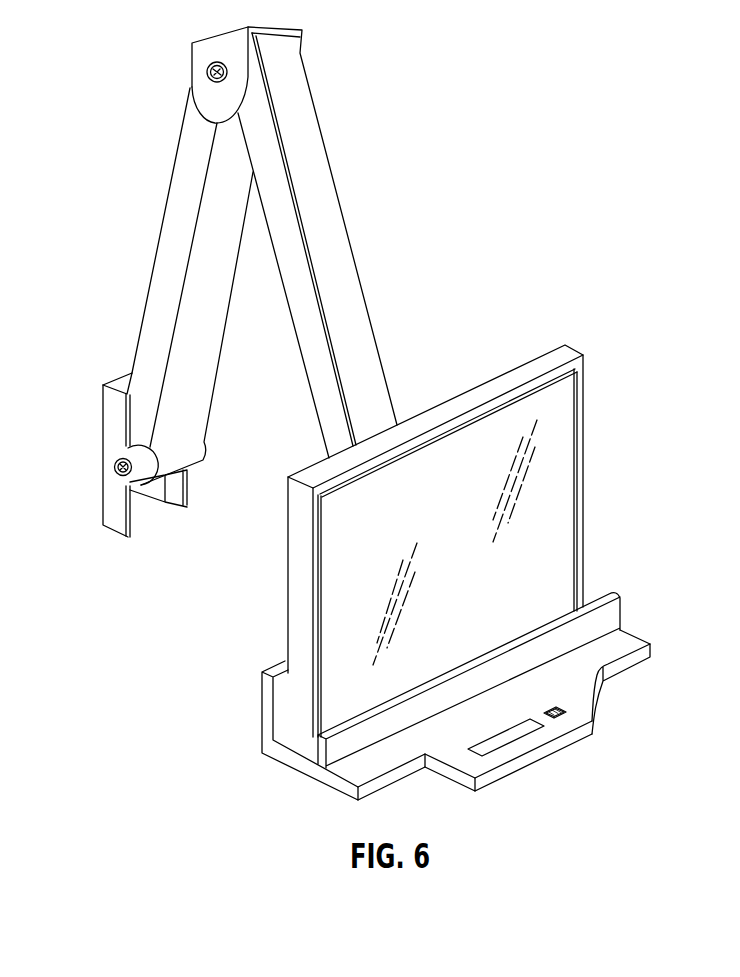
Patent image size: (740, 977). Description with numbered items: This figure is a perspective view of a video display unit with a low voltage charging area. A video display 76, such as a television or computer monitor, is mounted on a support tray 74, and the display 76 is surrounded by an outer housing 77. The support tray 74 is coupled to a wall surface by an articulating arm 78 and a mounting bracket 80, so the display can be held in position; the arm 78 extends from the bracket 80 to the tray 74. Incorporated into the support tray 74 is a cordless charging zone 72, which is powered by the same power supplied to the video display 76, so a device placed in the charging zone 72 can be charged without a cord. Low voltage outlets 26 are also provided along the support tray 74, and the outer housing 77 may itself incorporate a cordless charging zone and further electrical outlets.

The articulating arm 78 is at (355, 265).
The mounting bracket 80 is at (107, 427).
The outer housing 77 is at (567, 356).
The video display 76 is at (568, 509).
The support tray 74 is at (263, 707).
The cordless charging zone 72 is at (513, 735).
The low voltage outlets 26 is at (565, 710).